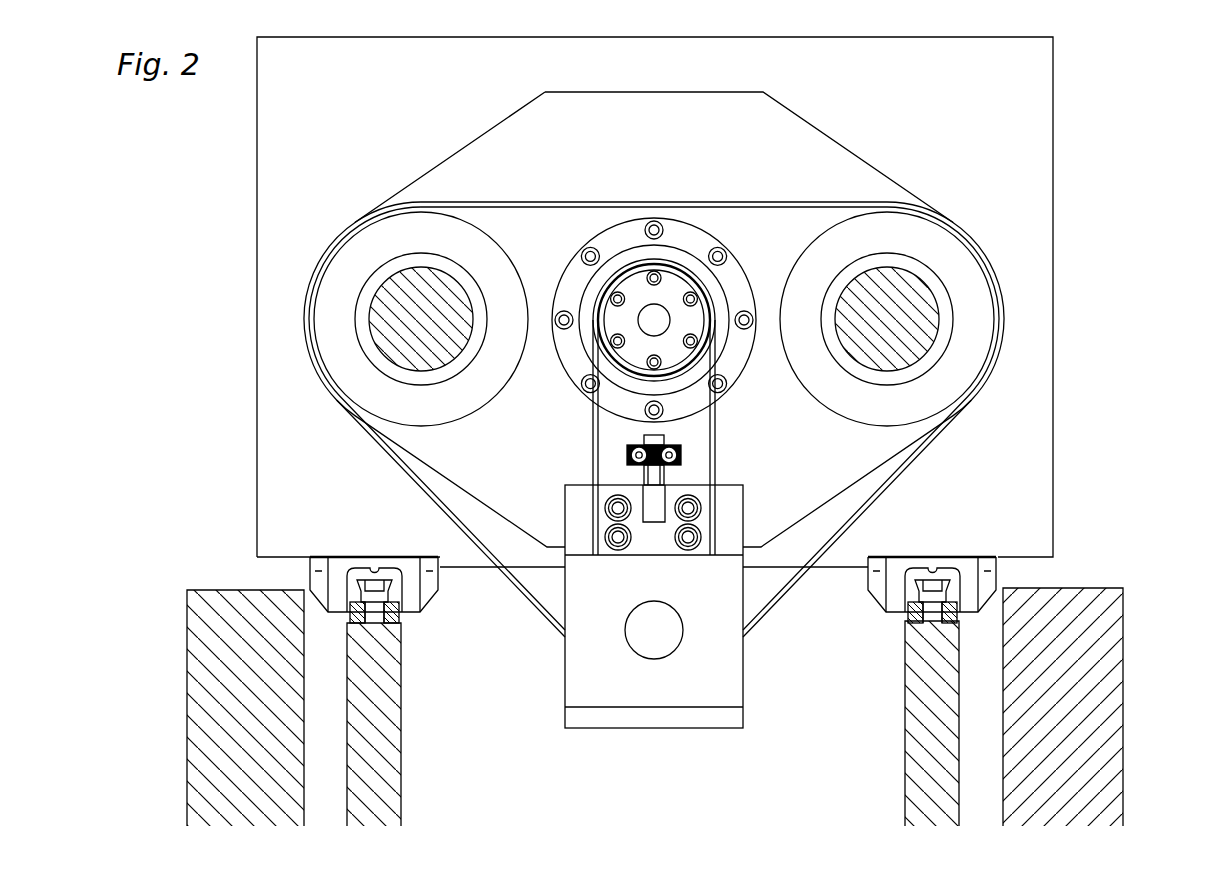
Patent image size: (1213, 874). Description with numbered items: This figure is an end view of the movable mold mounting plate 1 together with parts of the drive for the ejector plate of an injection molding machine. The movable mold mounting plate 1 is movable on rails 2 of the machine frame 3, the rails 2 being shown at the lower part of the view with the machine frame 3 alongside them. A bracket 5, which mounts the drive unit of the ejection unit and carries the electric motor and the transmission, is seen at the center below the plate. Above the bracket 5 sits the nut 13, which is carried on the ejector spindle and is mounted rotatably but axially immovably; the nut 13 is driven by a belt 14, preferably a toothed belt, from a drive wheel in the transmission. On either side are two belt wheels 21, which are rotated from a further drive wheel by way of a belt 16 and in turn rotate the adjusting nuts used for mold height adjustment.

The movable mold mounting plate 1 is at (975, 155).
The rails 2 is at (960, 610).
The machine frame 3 is at (1120, 775).
The bracket 5 is at (710, 685).
The nut 13 is at (670, 285).
The belt 14 is at (710, 437).
The belt 16 is at (874, 498).
The belt wheels 21 is at (340, 275).